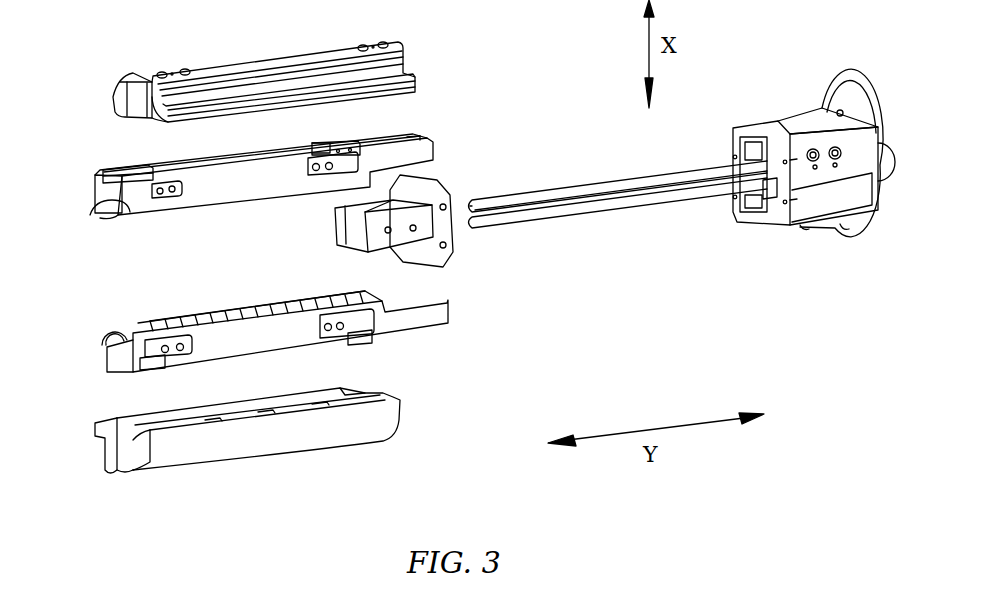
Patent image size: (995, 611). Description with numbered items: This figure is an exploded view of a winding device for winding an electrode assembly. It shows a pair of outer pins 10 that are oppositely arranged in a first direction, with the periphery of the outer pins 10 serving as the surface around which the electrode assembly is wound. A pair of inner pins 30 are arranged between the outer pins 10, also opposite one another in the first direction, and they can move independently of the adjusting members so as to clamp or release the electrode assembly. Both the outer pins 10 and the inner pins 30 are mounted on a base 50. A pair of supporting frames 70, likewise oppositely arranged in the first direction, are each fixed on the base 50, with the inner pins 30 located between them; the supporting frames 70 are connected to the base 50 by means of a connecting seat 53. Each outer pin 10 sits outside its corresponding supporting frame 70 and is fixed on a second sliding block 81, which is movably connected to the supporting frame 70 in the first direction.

The outer pin 10 is at (237, 65).
The supporting frame 70 is at (190, 172).
The second sliding block 81 is at (117, 178).
The inner pin 30 is at (600, 185).
The connecting seat 53 is at (447, 267).
The base 50 is at (810, 200).